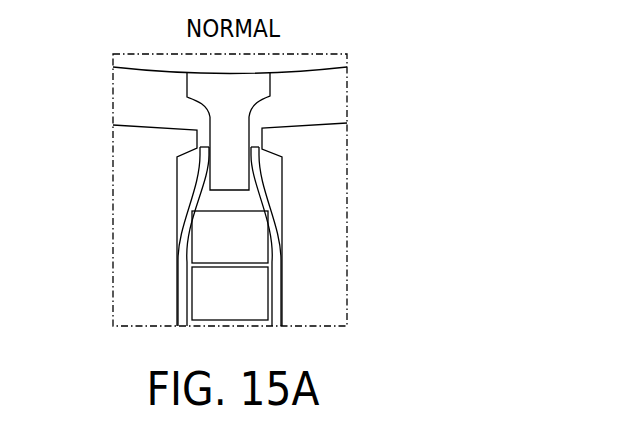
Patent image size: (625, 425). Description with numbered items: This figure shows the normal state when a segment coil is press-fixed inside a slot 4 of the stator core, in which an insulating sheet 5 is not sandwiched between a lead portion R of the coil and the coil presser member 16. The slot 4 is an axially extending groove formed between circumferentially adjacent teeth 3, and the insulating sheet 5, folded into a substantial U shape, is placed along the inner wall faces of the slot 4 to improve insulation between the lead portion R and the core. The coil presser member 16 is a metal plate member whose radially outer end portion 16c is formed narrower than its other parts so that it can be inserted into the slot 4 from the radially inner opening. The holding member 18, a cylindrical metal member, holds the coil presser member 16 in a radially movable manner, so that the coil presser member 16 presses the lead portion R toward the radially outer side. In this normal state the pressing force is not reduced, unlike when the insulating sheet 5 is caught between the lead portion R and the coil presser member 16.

The teeth 3 is at (320, 200).
The slot 4 is at (178, 195).
The insulating sheet 5 is at (265, 185).
The coil presser member 16 is at (187, 89).
The radially outer end portion 16c is at (252, 129).
The holding member 18 is at (150, 70).
The lead portion R is at (243, 242).